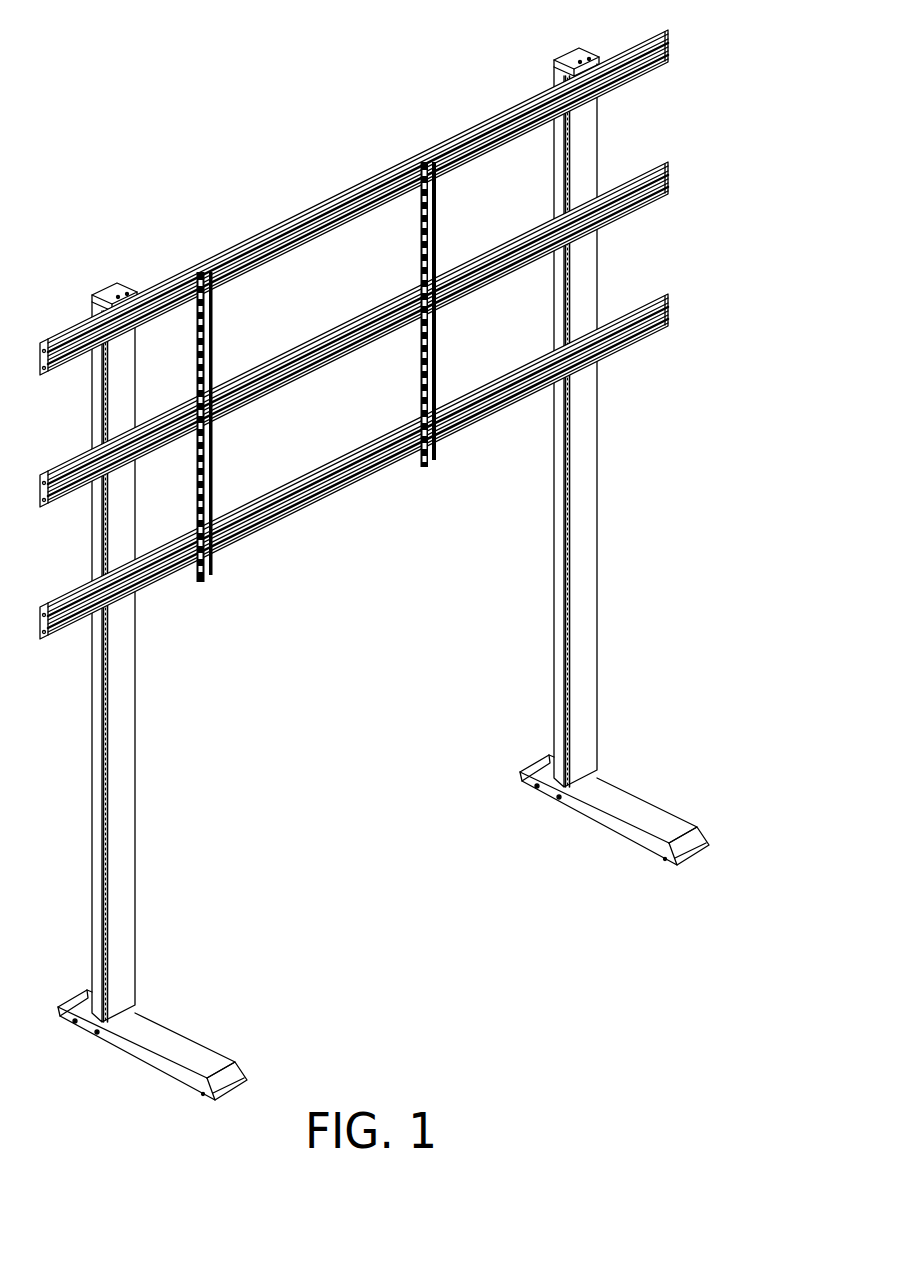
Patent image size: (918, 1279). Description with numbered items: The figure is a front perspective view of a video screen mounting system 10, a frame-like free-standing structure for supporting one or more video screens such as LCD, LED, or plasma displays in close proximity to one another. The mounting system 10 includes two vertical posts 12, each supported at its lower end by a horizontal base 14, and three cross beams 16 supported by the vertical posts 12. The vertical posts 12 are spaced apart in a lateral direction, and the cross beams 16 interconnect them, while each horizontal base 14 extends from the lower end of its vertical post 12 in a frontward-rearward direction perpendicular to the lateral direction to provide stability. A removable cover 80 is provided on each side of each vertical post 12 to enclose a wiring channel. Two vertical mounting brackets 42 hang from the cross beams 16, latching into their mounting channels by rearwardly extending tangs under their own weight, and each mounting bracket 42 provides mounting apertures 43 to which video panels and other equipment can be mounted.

The video screen mounting system 10 is at (388, 565).
The vertical post 12 is at (122, 730).
The horizontal base 14 is at (187, 1052).
The cross beam 16 is at (333, 208).
The vertical mounting bracket 42 is at (213, 330).
The mounting aperture 43 is at (212, 468).
The removable cover 80 is at (97, 930).